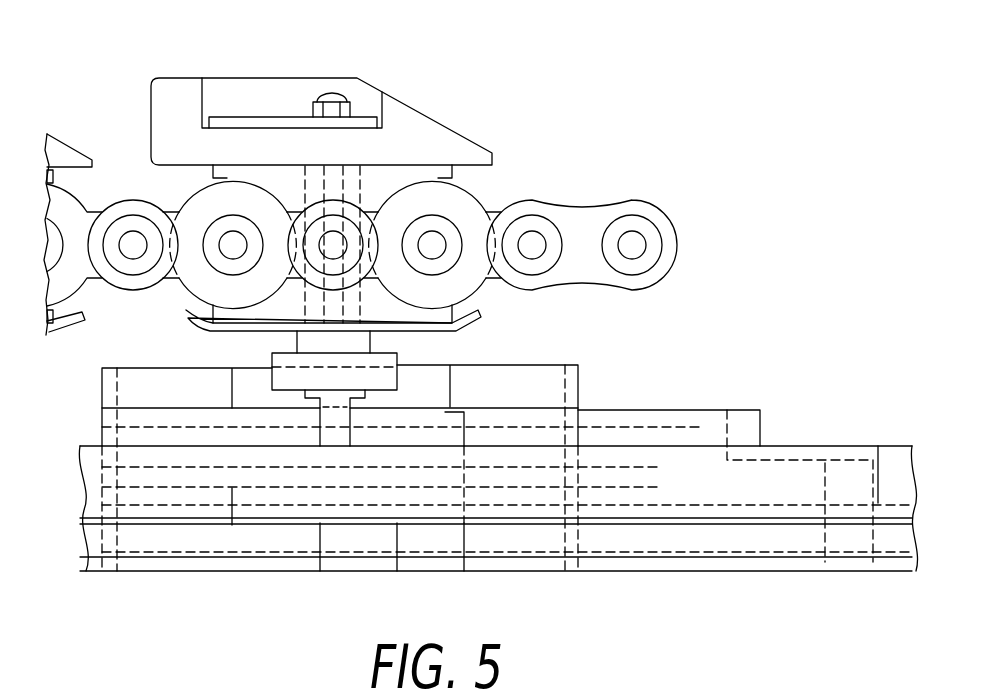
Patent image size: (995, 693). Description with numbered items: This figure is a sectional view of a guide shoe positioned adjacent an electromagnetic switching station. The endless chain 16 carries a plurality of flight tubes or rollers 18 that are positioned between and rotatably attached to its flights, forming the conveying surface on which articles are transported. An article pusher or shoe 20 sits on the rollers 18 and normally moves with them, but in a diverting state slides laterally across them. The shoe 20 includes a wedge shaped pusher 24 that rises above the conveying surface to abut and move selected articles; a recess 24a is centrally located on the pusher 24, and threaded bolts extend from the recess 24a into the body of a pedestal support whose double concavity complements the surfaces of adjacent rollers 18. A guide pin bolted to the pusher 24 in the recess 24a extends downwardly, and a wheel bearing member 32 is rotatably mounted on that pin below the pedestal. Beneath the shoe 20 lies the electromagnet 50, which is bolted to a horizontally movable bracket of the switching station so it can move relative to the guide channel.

The endless chain 16 is at (628, 193).
The flight tubes or rollers 18 is at (479, 193).
The article pusher or shoe 20 is at (533, 66).
The wedge shaped pusher 24 is at (408, 97).
The recess 24a is at (237, 78).
The wheel bearing member 32 is at (397, 353).
The electromagnet 50 is at (578, 380).